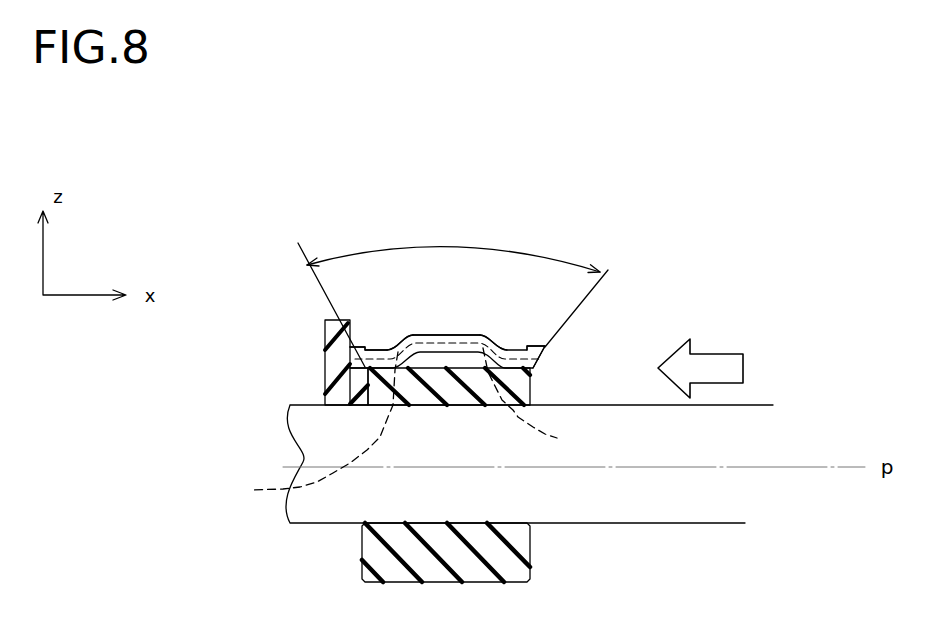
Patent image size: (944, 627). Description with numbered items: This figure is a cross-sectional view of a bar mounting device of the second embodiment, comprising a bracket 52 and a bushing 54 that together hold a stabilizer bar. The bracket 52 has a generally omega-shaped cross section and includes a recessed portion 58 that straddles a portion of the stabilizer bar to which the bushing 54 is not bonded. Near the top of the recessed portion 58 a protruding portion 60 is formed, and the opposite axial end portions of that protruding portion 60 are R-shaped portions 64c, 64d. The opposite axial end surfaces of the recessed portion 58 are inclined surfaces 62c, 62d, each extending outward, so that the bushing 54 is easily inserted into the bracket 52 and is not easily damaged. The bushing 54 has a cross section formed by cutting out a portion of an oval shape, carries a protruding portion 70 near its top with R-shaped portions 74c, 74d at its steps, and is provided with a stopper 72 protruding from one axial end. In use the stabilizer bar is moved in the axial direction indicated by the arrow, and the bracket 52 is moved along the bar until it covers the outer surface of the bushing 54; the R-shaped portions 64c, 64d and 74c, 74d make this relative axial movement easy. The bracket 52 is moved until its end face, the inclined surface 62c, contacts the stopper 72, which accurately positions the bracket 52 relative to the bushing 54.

The bracket 52 is at (548, 320).
The bushing 54 is at (378, 555).
The recessed portion 58 is at (510, 347).
The protruding portion 60 is at (429, 352).
The inclined surface 62c is at (325, 357).
The inclined surface 62d is at (540, 362).
The R-shaped portion 64c is at (398, 349).
The R-shaped portion 64d is at (490, 347).
The protruding portion 70 is at (443, 335).
The stopper 72 is at (325, 331).
The R-shaped portion 74c is at (302, 430).
The R-shaped portion 74d is at (542, 402).